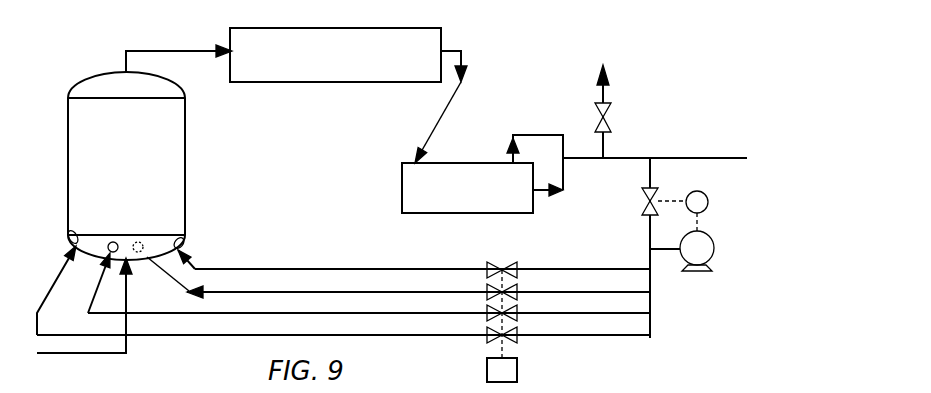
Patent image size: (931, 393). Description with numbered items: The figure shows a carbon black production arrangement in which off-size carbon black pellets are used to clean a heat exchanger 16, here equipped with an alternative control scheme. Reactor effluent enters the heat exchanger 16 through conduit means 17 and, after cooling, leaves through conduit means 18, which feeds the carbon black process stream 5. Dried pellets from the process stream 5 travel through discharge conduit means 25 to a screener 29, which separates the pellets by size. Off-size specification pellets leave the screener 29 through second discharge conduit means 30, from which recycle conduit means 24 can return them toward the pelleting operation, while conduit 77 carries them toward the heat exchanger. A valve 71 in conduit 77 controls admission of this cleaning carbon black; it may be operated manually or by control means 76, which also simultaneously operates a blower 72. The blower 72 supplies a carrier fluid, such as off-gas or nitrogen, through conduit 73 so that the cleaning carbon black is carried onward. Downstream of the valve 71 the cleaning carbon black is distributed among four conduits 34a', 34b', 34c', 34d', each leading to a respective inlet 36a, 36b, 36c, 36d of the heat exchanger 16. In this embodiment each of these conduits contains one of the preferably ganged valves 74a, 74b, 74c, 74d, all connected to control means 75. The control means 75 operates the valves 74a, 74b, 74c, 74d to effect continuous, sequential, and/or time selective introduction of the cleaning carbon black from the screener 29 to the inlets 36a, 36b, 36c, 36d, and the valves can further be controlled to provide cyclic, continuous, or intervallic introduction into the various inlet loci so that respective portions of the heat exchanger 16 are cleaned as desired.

The process stream 5 is at (318, 82).
The heat exchanger 16 is at (185, 157).
The conduit means 17 is at (92, 353).
The conduit means 18 is at (124, 62).
The recycle conduit means 24 is at (603, 92).
The discharge conduit means 25 is at (450, 106).
The screener 29 is at (402, 196).
The second discharge conduit means 30 is at (580, 158).
The conduit 34a' is at (369, 284).
The conduit 34b' is at (414, 248).
The conduit 34c' is at (398, 277).
The conduit 34d' is at (343, 291).
The inlet 36a is at (108, 252).
The inlet 36b is at (182, 238).
The inlet 36c is at (140, 254).
The inlet 36d is at (70, 232).
The valve 71 is at (645, 205).
The blower 72 is at (707, 272).
The conduit 73 is at (672, 250).
The ganged valve 74a is at (518, 305).
The ganged valve 74b is at (518, 262).
The ganged valve 74c is at (518, 284).
The ganged valve 74d is at (518, 327).
The control means 75 is at (517, 365).
The control means 76 is at (704, 194).
The conduit 77 is at (645, 188).